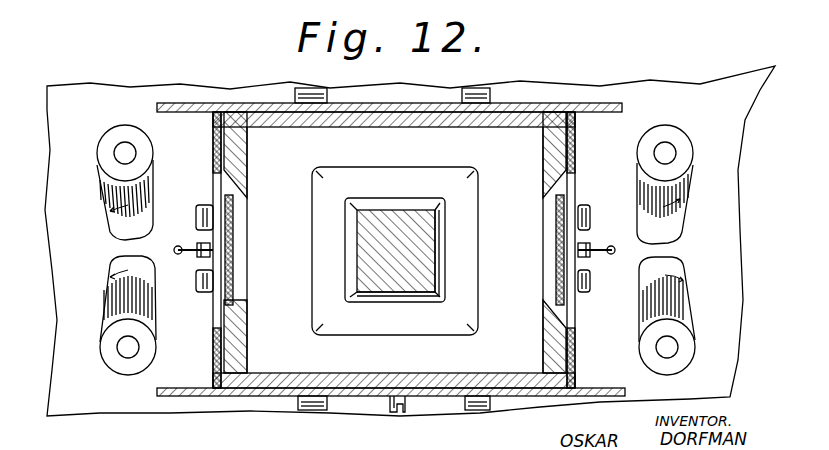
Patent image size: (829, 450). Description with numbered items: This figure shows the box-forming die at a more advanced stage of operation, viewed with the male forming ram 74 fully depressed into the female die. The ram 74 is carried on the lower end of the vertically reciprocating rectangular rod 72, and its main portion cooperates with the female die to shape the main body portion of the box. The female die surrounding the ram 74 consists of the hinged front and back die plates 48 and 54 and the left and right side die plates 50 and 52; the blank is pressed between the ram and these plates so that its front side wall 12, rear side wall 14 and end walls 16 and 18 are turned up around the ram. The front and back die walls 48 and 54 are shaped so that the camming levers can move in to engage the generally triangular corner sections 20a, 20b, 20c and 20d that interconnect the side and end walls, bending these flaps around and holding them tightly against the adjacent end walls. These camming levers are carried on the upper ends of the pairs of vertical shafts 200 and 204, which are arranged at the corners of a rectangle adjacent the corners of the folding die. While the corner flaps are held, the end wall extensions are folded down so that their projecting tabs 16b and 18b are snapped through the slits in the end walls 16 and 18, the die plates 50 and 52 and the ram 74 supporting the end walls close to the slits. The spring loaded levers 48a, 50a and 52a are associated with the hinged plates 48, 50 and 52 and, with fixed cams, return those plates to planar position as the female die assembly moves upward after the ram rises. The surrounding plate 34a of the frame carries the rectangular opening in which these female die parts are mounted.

The front side wall 12 is at (290, 386).
The rear side wall 14 is at (502, 128).
The end wall 16 is at (236, 190).
The projecting tab 16b is at (233, 253).
The end wall 18 is at (548, 318).
The projecting tab 18b is at (556, 252).
The integral corner section 20a is at (213, 362).
The integral corner section 20b is at (213, 143).
The integral corner section 20c is at (575, 145).
The integral corner section 20d is at (575, 357).
The housing wall 34a is at (698, 88).
The front die plate 48 is at (528, 397).
The spring loaded lever 48a is at (408, 418).
The left side die plate 50 is at (213, 190).
The spring loaded lever 50a is at (182, 254).
The right side die plate 52 is at (567, 190).
The spring loaded lever 52a is at (607, 250).
The back die plate 54 is at (532, 103).
The rectangular rod 72 is at (428, 244).
The male forming ram 74 is at (395, 236).
The vertical shaft 200 is at (116, 150).
The vertical shaft 204 is at (126, 352).